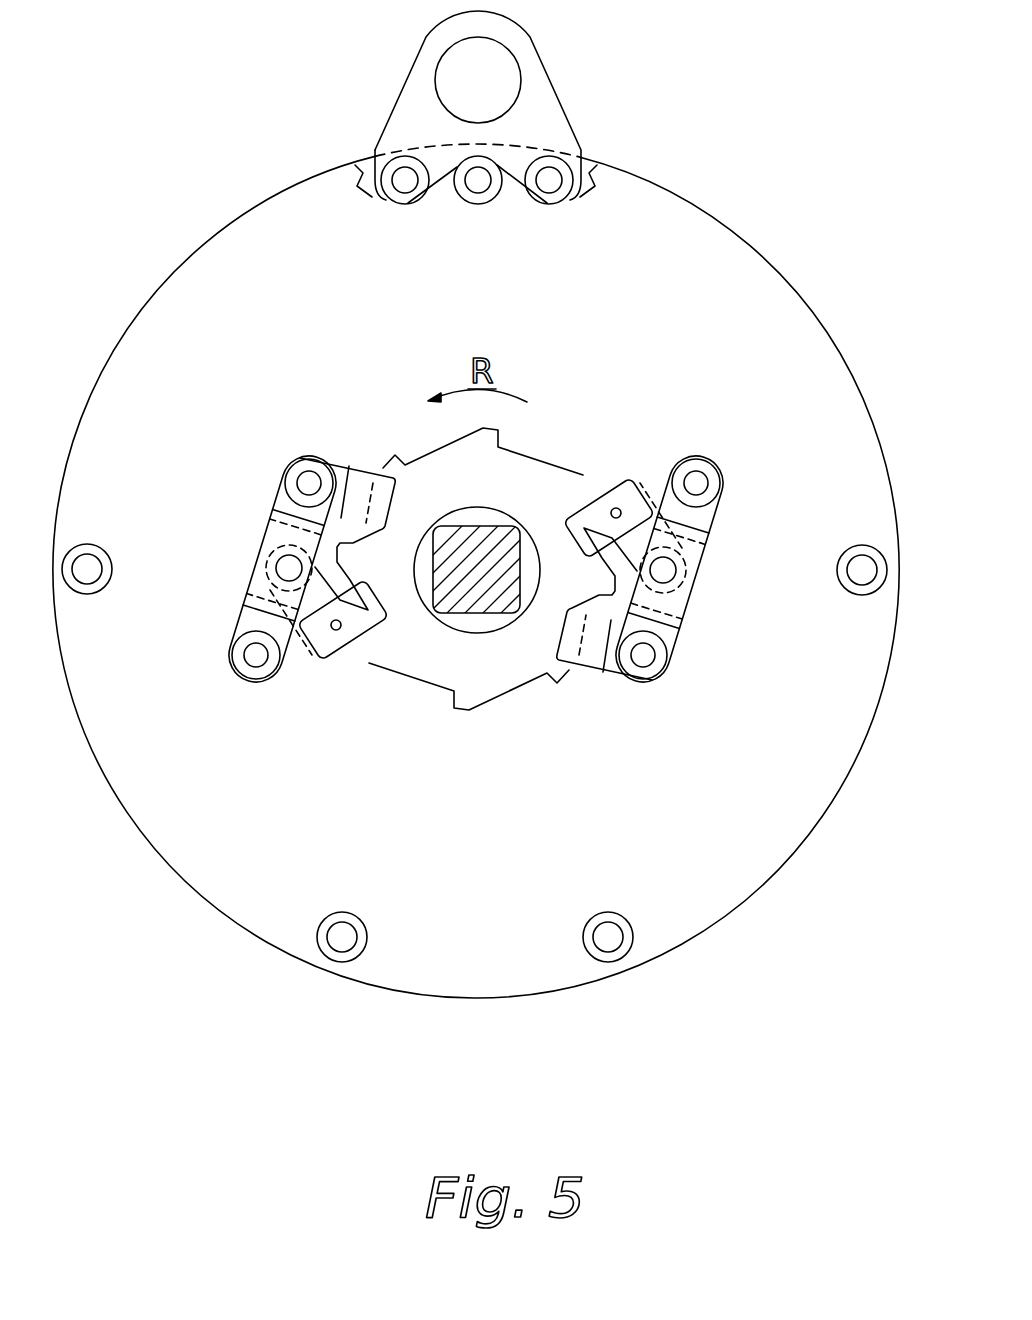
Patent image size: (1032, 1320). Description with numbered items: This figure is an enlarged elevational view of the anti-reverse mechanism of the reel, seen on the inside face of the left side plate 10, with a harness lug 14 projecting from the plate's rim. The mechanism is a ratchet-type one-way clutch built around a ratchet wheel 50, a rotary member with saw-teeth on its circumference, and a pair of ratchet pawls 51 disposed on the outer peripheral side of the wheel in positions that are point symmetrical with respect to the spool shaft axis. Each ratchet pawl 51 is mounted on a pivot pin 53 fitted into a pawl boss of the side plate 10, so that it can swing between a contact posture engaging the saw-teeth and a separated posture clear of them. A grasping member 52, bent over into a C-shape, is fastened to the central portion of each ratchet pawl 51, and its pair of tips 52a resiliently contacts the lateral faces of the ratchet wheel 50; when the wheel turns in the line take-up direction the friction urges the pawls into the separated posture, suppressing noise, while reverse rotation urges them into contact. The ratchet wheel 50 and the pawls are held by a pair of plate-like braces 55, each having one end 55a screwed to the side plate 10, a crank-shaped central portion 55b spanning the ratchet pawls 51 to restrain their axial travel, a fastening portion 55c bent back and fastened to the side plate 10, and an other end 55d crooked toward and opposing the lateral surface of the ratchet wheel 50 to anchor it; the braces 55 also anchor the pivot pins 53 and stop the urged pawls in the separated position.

The left side plate 10 is at (773, 360).
The harness lug 14 is at (543, 113).
The ratchet wheel 50 is at (510, 670).
The ratchet pawl 51 is at (643, 533).
The grasping member 52 is at (580, 483).
The tip of grasping member 52a is at (560, 677).
The pivot pin 53 is at (289, 568).
The brace 55 is at (461, 558).
The one end of brace 55a is at (247, 627).
The central portion of brace 55b is at (258, 593).
The fastening portion of brace 55c is at (282, 500).
The other end of brace 55d is at (370, 467).